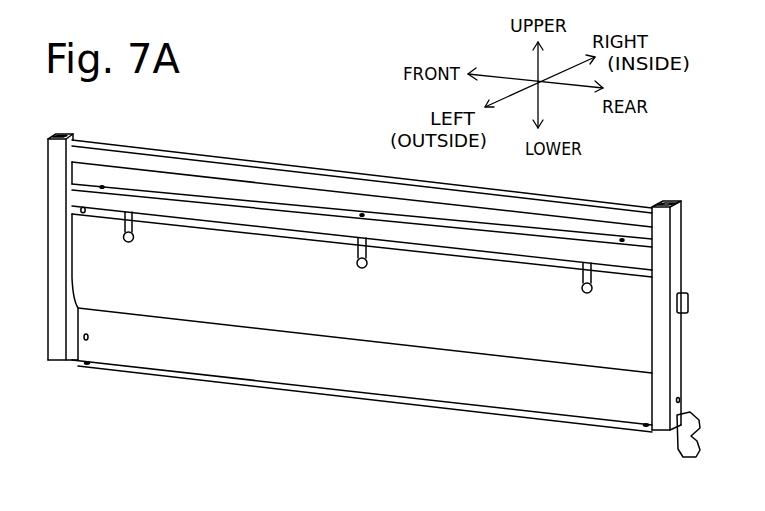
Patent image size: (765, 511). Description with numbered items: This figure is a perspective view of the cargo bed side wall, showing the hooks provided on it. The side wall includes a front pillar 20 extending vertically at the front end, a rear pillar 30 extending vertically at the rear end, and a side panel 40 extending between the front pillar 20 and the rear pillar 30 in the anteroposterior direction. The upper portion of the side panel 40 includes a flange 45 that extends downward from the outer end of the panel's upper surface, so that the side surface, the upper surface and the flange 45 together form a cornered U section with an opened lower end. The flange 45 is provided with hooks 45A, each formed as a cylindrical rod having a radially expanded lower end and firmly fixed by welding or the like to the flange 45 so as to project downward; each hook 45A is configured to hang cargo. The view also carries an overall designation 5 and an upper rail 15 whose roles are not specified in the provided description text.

The side gate assembly 5 is at (324, 156).
The upper rail 15 is at (287, 165).
The front pillar 20 is at (58, 356).
The rear pillar 30 is at (660, 419).
The side panel 40 is at (256, 352).
The flange 45 is at (166, 211).
The hooks 45A is at (134, 231).